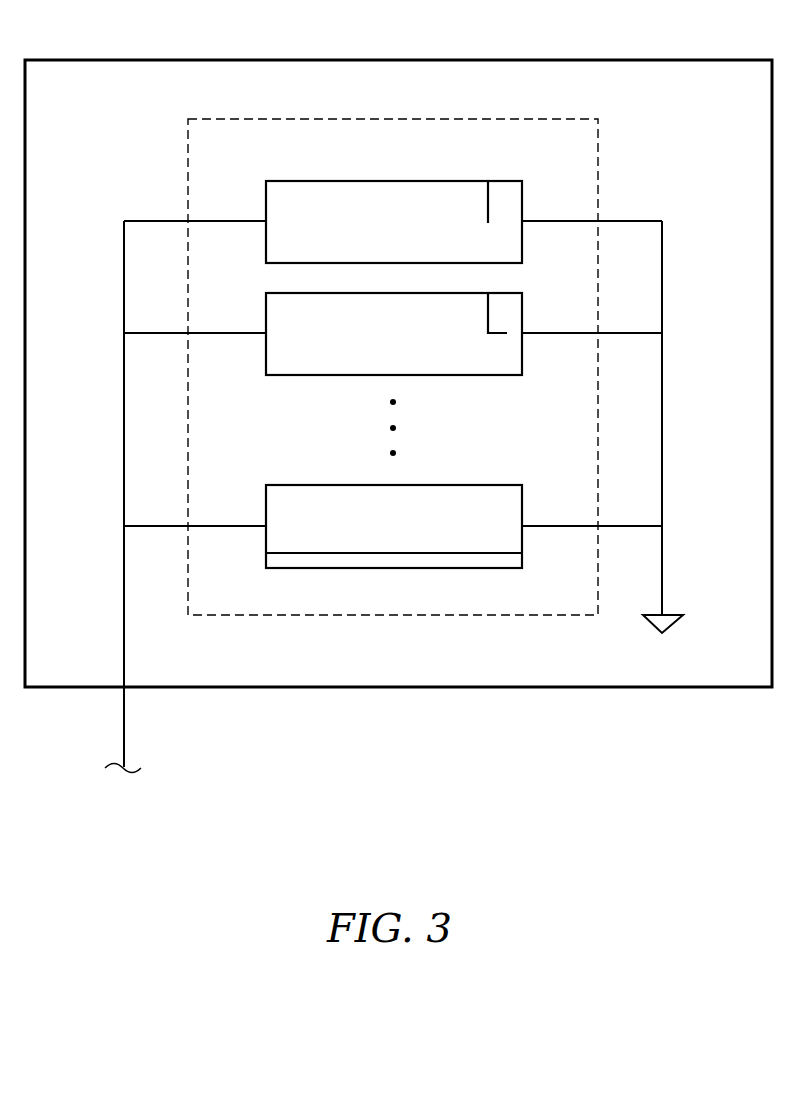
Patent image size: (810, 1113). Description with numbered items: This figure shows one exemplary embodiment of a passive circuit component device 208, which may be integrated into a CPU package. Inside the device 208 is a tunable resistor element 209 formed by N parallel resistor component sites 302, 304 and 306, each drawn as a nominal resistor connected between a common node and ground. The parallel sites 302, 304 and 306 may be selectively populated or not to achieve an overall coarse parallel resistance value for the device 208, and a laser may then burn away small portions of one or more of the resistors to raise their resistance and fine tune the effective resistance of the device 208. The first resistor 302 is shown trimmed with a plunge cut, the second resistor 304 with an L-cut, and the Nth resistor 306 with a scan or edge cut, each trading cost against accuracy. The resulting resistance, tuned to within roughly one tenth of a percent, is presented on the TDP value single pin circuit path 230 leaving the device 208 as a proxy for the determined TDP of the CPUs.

The passive circuit component device 208 is at (640, 60).
The tunable resistor element 209 is at (598, 186).
The TDP value single pin circuit path 230 is at (122, 717).
The first resistor component site 302 is at (423, 181).
The second resistor component site 304 is at (448, 375).
The Nth resistor component site 306 is at (428, 485).